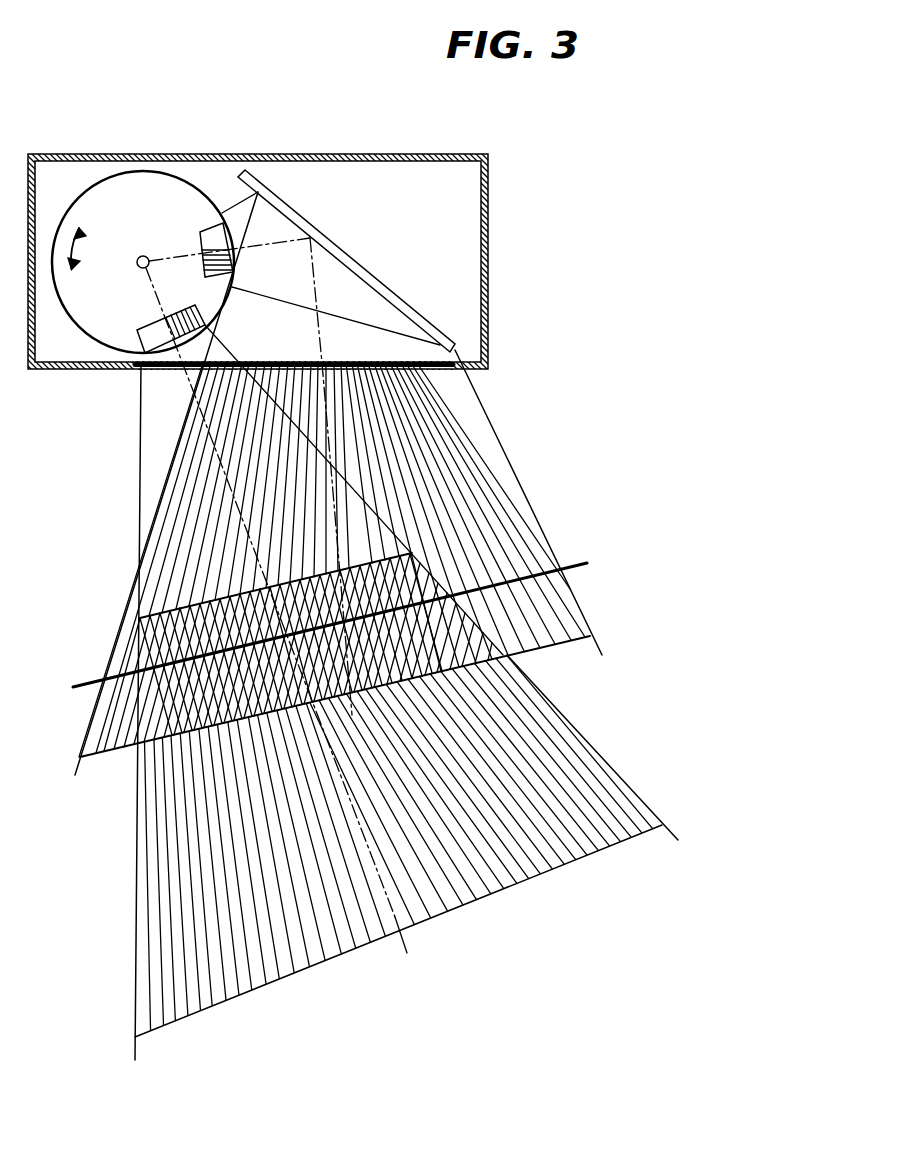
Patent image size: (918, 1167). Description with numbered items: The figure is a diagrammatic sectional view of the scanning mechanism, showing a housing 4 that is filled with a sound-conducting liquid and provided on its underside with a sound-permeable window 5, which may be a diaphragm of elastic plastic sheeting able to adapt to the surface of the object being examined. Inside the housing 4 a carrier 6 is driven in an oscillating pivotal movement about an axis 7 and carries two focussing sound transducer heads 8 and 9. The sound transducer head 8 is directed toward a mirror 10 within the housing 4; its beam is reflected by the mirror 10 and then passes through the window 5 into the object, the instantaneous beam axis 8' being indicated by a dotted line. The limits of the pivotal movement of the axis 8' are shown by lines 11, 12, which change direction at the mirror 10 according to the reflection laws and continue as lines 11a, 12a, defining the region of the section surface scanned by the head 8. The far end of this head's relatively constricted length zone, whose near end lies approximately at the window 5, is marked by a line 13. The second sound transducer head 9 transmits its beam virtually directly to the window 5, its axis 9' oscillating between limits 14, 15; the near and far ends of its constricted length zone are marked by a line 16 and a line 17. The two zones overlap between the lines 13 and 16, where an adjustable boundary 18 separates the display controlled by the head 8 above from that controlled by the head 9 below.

The housing 4 is at (490, 256).
The sound-permeable window 5 is at (248, 362).
The carrier 6 is at (97, 190).
The axis 7 is at (137, 263).
The sound transducer head 8 is at (203, 245).
The axis of the sound beam 8' is at (320, 476).
The sound transducer head 9 is at (164, 326).
The axis of the sound beam 9' is at (324, 610).
The mirror 10 is at (343, 255).
The line 11 is at (245, 205).
The line 11a is at (116, 645).
The line 12 is at (347, 305).
The line 12a is at (505, 452).
The line 13 is at (545, 650).
The limit 14 is at (580, 733).
The limit 15 is at (136, 860).
The line 16 is at (177, 611).
The line 17 is at (320, 957).
The boundary 18 is at (580, 567).